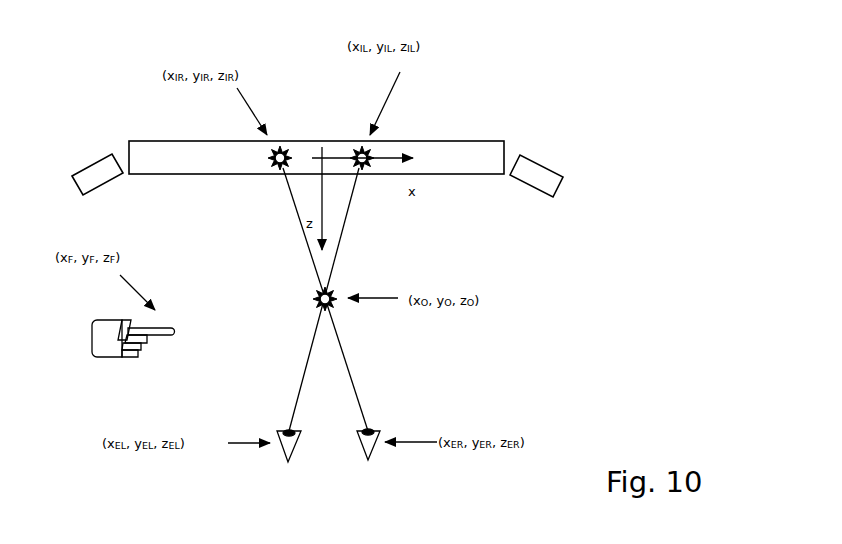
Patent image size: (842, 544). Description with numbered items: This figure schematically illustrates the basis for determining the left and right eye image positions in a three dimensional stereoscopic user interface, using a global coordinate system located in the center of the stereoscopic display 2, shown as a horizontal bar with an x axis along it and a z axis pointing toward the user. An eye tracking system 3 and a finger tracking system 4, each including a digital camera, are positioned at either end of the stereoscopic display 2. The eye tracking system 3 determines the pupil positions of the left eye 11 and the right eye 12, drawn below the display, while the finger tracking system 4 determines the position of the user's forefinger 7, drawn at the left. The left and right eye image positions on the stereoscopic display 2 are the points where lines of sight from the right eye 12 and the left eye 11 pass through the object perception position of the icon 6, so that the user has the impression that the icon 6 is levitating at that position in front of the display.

The stereoscopic LCD display 2 is at (467, 141).
The eye tracking system 3 is at (563, 183).
The finger tracking system 4 is at (95, 161).
The icon 6 is at (313, 298).
The finger 7 is at (165, 336).
The left eye 11 is at (283, 452).
The right eye 12 is at (369, 456).